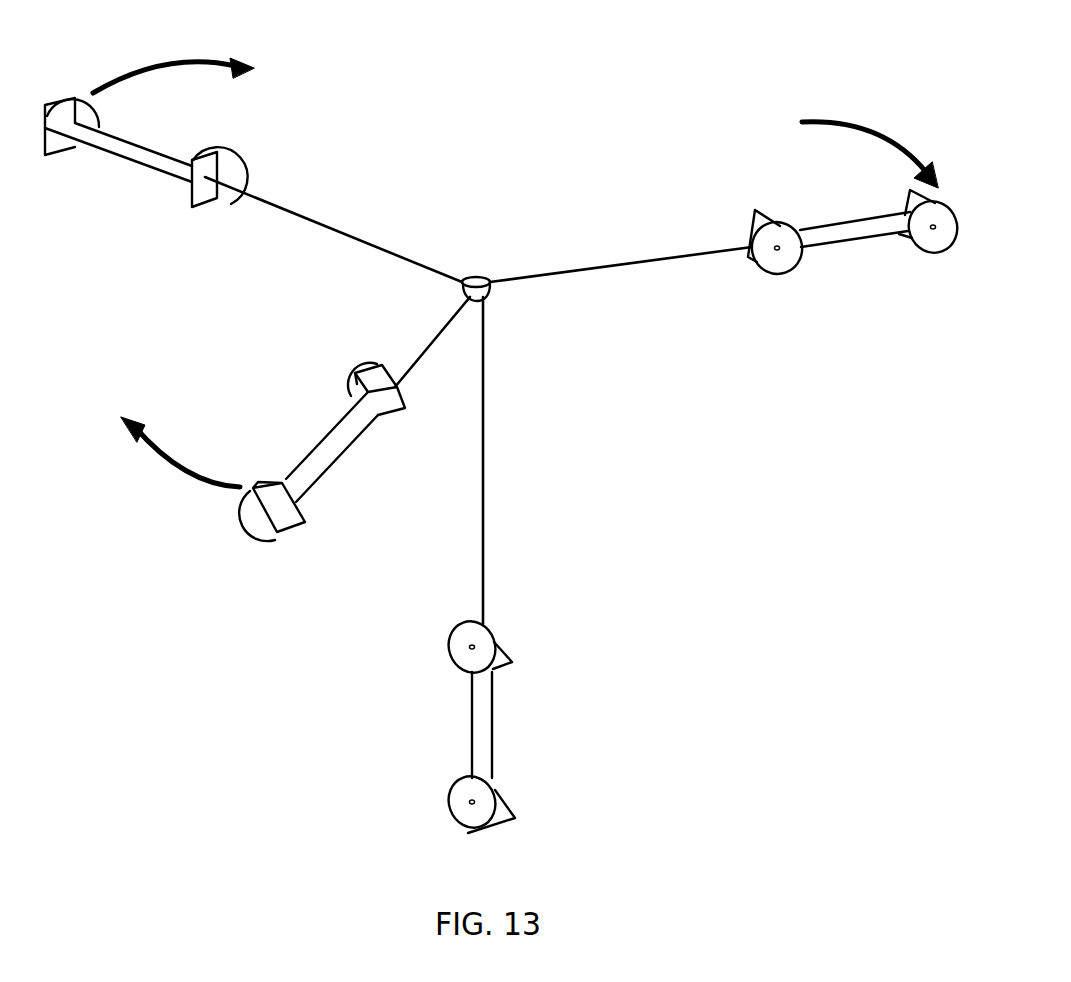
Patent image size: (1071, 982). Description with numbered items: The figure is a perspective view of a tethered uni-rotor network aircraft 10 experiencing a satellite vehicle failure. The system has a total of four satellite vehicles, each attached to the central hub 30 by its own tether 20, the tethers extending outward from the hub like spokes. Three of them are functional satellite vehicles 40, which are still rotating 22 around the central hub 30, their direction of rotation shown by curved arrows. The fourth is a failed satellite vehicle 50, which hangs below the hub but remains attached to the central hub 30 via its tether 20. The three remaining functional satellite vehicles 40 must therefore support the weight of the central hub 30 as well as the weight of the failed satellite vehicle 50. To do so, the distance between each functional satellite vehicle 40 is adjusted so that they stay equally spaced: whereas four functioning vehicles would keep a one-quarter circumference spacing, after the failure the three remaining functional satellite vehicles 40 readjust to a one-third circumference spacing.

The modular power system 10 is at (549, 74).
The tether 20 is at (367, 238).
The rotating 22 is at (165, 62).
The central hub 30 is at (481, 279).
The functional satellite vehicle 40 is at (135, 143).
The failed satellite vehicle 50 is at (493, 725).